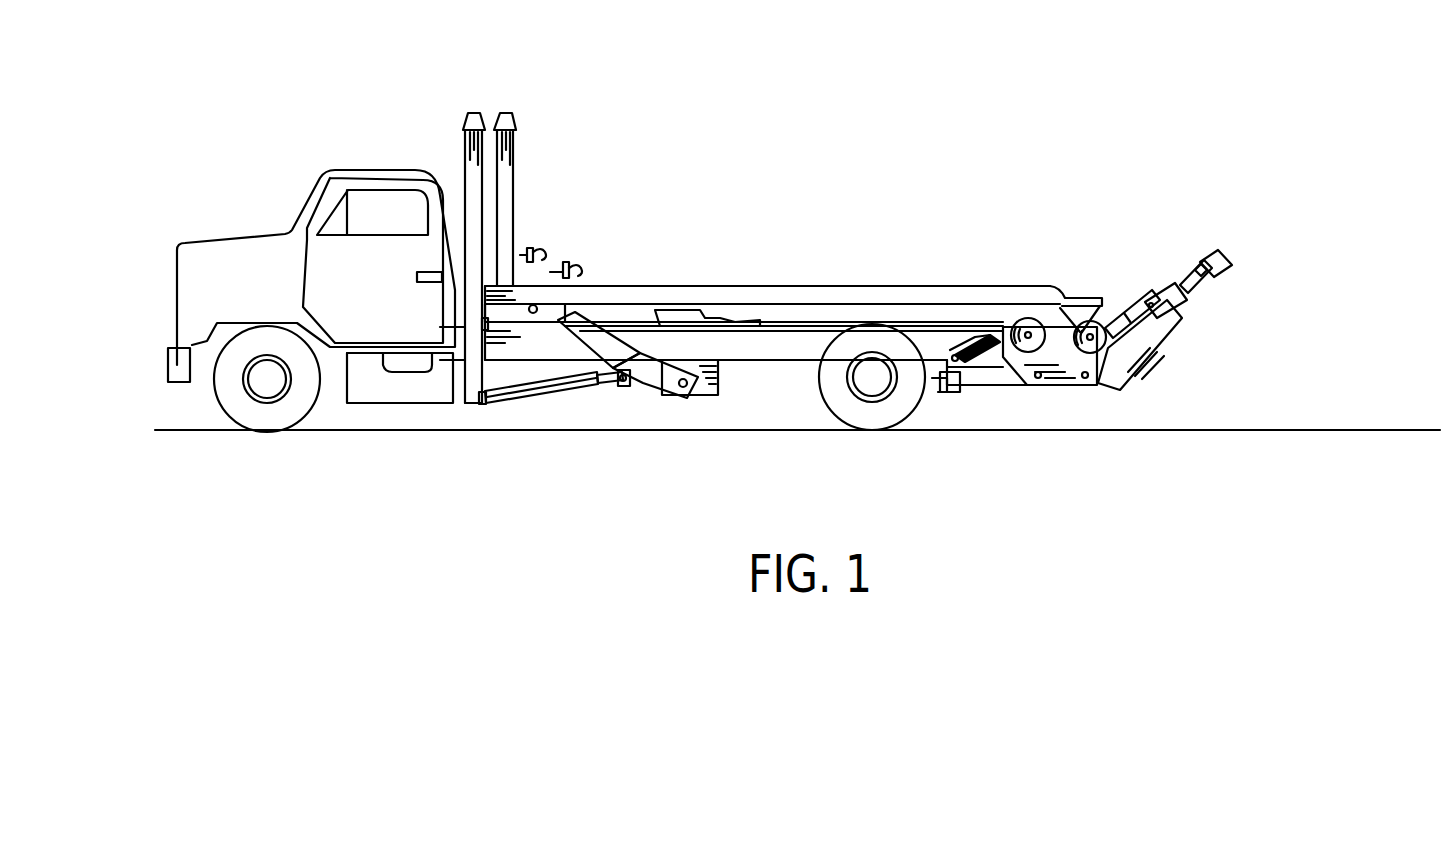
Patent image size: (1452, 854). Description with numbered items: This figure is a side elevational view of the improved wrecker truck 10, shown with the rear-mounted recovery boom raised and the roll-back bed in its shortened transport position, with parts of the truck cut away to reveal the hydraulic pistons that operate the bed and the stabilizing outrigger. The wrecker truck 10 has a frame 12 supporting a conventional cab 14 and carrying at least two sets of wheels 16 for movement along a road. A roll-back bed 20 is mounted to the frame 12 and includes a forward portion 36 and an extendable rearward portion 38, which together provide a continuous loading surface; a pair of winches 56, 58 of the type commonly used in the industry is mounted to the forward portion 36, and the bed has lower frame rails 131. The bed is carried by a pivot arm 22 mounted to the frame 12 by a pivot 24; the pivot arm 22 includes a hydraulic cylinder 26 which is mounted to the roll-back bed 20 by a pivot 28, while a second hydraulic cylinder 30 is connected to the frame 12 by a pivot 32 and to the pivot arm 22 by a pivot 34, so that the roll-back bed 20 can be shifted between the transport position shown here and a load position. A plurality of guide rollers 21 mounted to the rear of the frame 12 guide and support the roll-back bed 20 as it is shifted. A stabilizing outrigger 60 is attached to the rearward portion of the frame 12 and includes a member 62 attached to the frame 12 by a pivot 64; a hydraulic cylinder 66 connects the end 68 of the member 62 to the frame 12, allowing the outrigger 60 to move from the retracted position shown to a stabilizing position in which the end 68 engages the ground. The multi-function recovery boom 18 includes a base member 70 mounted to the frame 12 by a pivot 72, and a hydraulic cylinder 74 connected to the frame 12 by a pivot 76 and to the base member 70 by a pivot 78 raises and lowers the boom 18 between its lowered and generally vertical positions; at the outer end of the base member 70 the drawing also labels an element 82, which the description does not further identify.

The wrecker truck 10 is at (726, 120).
The frame 12 is at (782, 363).
The cab 14 is at (365, 170).
The wheels 16 is at (300, 428).
The multi-function recovery boom 18 is at (1182, 335).
The roll-back bed 20 is at (778, 286).
The guide rollers 21 is at (1024, 330).
The pivot arm 22 is at (660, 376).
The pivot 24 is at (688, 394).
The hydraulic cylinder 26 is at (560, 320).
The pivot 28 is at (543, 297).
The second hydraulic cylinder 30 is at (537, 392).
The pivot 32 is at (485, 406).
The pivot 34 is at (633, 384).
The forward portion 36 is at (537, 287).
The extendable rearward portion 38 is at (695, 286).
The winch 56 is at (512, 253).
The winch 58 is at (565, 276).
The stabilizing outrigger 60 is at (1012, 395).
The member 62 is at (982, 381).
The pivot 64 is at (1047, 381).
The hydraulic cylinder 66 is at (957, 340).
The end 68 is at (947, 392).
The base member 70 is at (1150, 358).
The pivot 72 is at (1093, 381).
The hydraulic cylinder 74 is at (1117, 322).
The pivot 76 is at (1090, 335).
The pivot 78 is at (1157, 305).
The piston rod 82 is at (1222, 268).
The lower frame rails 131 is at (838, 315).